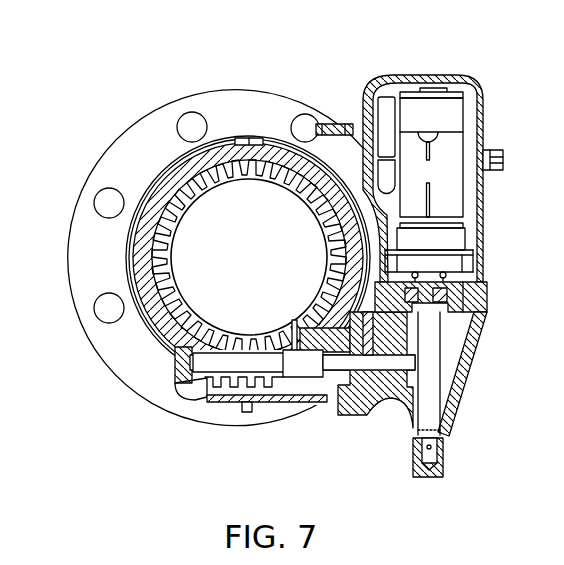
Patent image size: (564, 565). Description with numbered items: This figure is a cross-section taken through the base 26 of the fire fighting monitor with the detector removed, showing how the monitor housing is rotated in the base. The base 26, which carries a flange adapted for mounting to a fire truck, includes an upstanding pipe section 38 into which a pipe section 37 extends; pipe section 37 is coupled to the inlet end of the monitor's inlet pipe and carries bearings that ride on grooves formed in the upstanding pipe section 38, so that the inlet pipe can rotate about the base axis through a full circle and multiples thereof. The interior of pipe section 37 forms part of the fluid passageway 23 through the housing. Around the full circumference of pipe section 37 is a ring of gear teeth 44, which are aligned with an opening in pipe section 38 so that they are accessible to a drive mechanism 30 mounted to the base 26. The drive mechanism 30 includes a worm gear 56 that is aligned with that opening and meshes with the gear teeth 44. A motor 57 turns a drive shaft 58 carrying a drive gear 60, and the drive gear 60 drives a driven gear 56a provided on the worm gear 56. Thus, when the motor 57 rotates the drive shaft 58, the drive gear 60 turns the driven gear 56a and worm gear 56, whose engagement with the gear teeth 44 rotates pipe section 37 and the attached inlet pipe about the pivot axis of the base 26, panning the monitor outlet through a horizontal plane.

The base 26 is at (236, 86).
The pipe section 37 is at (178, 190).
The upstanding pipe section 38 is at (143, 315).
The fluid passageway 23 is at (185, 248).
The gear teeth 44 is at (268, 148).
The worm gear 56 is at (212, 382).
The driven gear 56a is at (378, 407).
The drive mechanism 30 is at (485, 198).
The motor 57 is at (448, 153).
The drive gear 60 is at (463, 318).
The drive shaft 58 is at (450, 347).